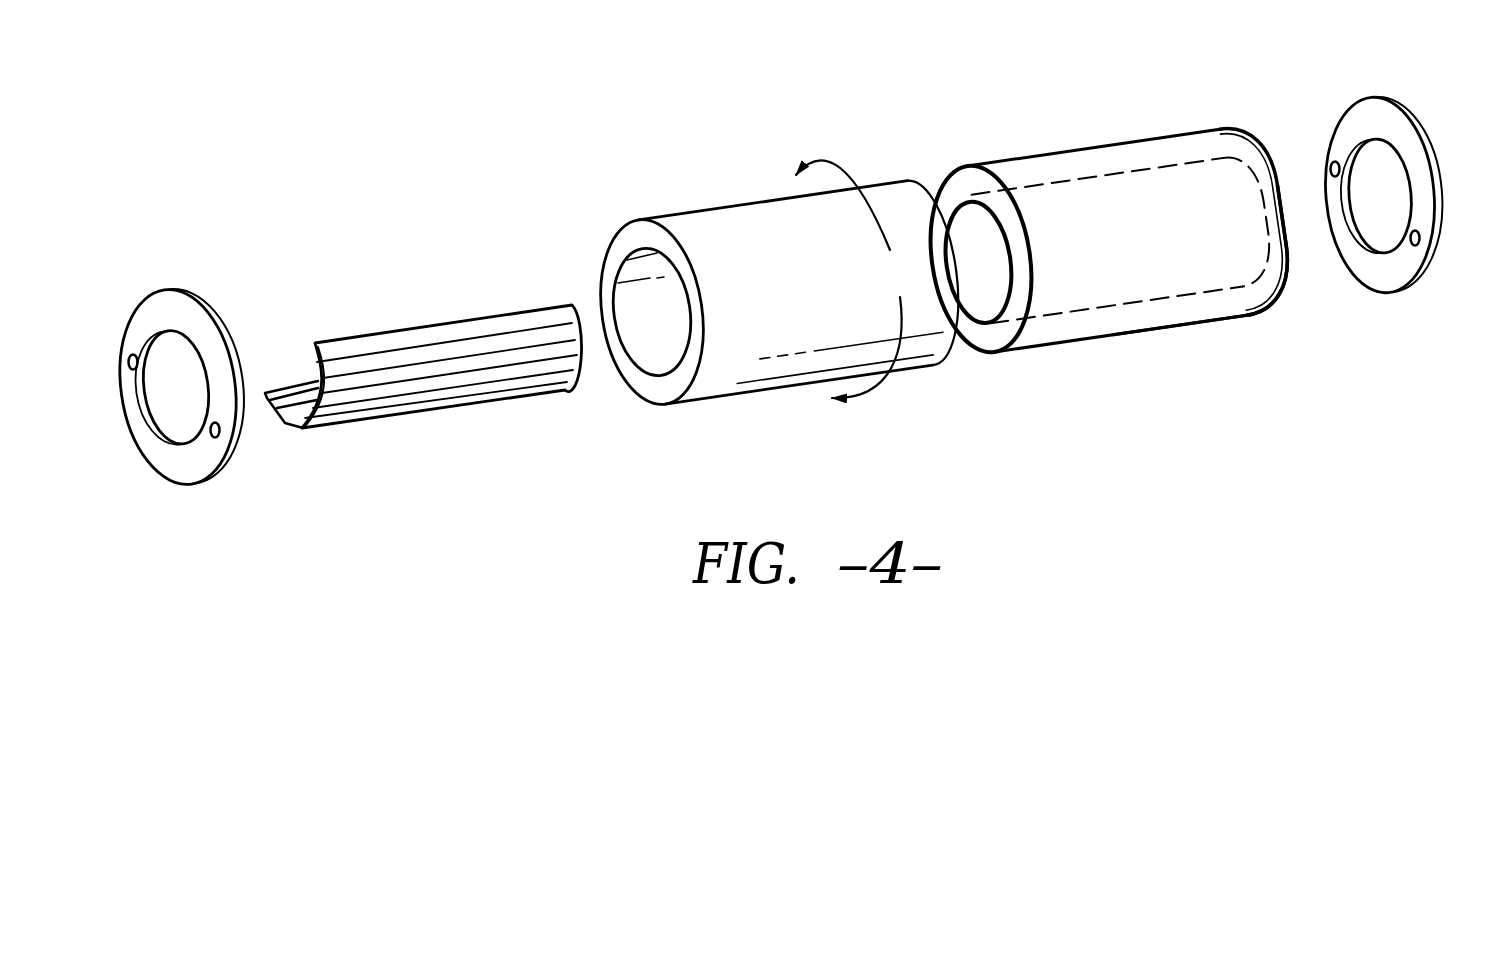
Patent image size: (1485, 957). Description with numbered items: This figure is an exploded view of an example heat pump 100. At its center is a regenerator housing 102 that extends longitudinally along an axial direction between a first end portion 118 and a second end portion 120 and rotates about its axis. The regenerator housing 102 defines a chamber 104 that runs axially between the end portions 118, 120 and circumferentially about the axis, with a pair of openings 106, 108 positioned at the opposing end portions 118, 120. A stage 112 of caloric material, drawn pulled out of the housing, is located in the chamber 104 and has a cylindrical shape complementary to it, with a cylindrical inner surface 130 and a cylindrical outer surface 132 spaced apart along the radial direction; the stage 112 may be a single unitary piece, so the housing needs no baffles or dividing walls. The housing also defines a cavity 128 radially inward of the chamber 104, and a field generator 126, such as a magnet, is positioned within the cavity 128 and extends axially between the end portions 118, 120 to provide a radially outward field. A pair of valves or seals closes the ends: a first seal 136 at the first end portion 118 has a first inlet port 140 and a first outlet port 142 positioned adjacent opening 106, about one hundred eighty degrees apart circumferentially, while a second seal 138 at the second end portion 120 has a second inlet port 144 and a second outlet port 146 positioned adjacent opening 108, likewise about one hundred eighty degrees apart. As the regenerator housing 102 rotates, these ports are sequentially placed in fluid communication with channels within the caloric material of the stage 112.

The heat pump 100 is at (460, 139).
The regenerator housing 102 is at (1117, 162).
The chamber 104 is at (1153, 308).
The opening 106 is at (962, 185).
The opening 108 is at (1274, 276).
The stage 112 is at (760, 228).
The first end portion 118 is at (958, 158).
The second end portion 120 is at (1250, 322).
The field generator 126 is at (282, 424).
The cavity 128 is at (990, 282).
The cylindrical inner surface 130 is at (650, 341).
The cylindrical outer surface 132 is at (653, 214).
The first seal 136 is at (172, 311).
The second seal 138 is at (1372, 122).
The first inlet port 140 is at (211, 437).
The first outlet port 142 is at (126, 353).
The second inlet port 144 is at (1325, 164).
The second outlet port 146 is at (1409, 250).